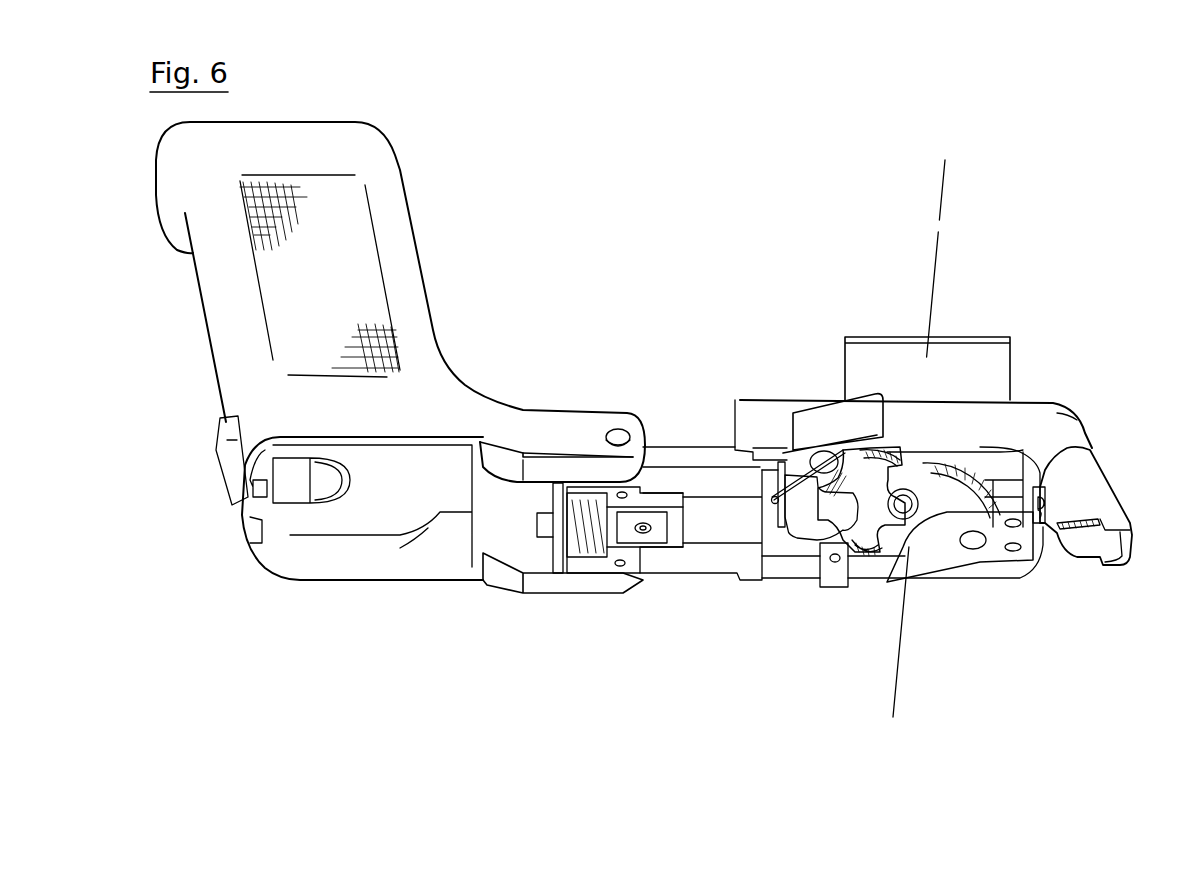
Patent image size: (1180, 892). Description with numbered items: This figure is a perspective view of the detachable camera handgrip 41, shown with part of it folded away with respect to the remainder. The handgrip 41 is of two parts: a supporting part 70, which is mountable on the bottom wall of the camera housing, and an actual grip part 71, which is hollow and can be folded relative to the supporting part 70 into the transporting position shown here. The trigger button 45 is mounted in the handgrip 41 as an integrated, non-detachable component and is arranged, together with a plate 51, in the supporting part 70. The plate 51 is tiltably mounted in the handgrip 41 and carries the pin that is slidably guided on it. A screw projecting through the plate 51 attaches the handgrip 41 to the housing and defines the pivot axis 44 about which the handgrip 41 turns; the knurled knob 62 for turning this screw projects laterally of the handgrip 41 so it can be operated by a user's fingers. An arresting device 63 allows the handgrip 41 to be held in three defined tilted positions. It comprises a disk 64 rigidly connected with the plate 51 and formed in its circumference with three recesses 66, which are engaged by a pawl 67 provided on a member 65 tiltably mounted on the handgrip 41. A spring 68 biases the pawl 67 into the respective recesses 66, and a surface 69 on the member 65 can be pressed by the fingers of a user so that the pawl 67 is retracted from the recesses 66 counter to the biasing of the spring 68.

The handgrip 41 is at (513, 320).
The pivot axis 44 is at (940, 236).
The trigger button 45 is at (1093, 480).
The plate 51 is at (990, 367).
The knurled knob 62 is at (933, 520).
The arresting device 63 is at (850, 540).
The disk 64 is at (900, 452).
The member 65 is at (787, 430).
The recesses 66 is at (882, 453).
The pawl 67 is at (818, 518).
The spring 68 is at (772, 500).
The surface 69 is at (823, 423).
The supporting part 70 is at (677, 452).
The grip part 71 is at (408, 292).